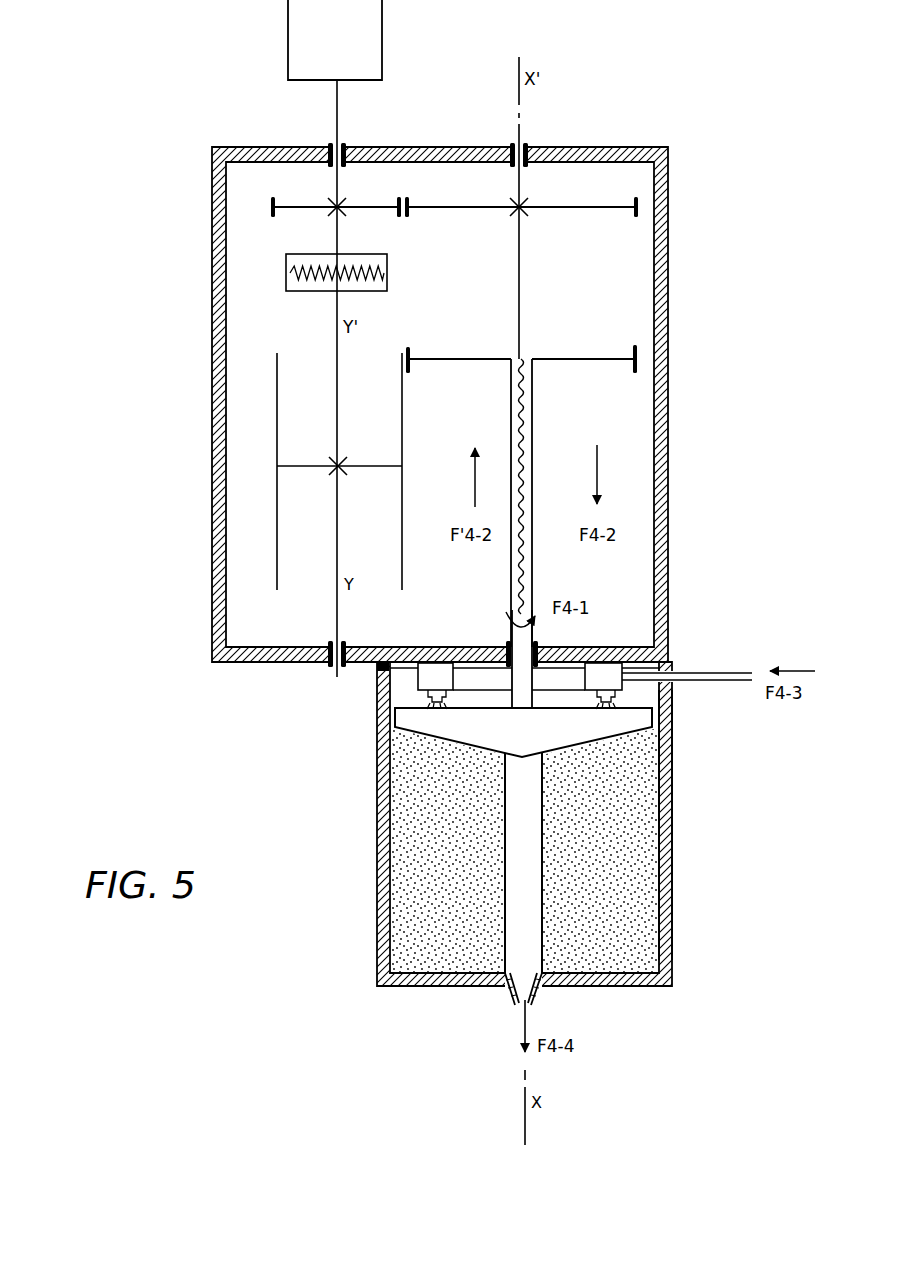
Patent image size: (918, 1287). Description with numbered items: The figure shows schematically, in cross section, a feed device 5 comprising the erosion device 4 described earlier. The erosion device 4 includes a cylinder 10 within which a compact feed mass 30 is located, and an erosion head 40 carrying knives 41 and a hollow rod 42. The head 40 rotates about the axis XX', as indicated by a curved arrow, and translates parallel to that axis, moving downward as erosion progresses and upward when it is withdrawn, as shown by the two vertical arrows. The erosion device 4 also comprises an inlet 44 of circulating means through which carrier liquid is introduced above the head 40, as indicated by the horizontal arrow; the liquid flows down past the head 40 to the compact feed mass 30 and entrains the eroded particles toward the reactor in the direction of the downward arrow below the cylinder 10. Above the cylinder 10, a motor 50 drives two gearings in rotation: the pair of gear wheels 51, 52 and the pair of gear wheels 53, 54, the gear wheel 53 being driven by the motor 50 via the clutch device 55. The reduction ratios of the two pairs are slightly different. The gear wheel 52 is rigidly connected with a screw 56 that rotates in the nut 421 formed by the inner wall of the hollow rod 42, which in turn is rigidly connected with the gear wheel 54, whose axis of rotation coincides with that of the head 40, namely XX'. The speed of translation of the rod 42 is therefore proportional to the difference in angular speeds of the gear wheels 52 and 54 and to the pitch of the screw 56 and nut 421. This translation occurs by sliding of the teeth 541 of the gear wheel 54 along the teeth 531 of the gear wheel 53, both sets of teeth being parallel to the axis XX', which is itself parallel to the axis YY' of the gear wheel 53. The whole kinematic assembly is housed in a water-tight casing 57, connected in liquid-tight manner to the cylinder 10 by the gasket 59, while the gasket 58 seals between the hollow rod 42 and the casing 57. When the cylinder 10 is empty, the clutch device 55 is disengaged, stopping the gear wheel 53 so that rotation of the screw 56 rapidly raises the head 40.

The erosion device 4 is at (679, 752).
The feed device 5 is at (682, 258).
The cylinder 10 is at (672, 818).
The compact feed mass 30 is at (612, 840).
The erosion head 40 is at (616, 703).
The knives 41 is at (478, 747).
The hollow rod 42 is at (532, 521).
The inlet 44 is at (448, 686).
The motor 50 is at (382, 26).
The gear wheel 51 is at (382, 206).
The gear wheel 52 is at (470, 206).
The gear wheel 53 is at (277, 405).
The gear wheel 54 is at (412, 362).
The clutch device 55 is at (387, 273).
The screw 56 is at (521, 300).
The water-tight casing 57 is at (668, 372).
The gasket 58 is at (538, 648).
The gasket 59 is at (380, 667).
The nut 421 is at (527, 415).
The teeth 531 is at (402, 523).
The teeth 541 is at (410, 366).